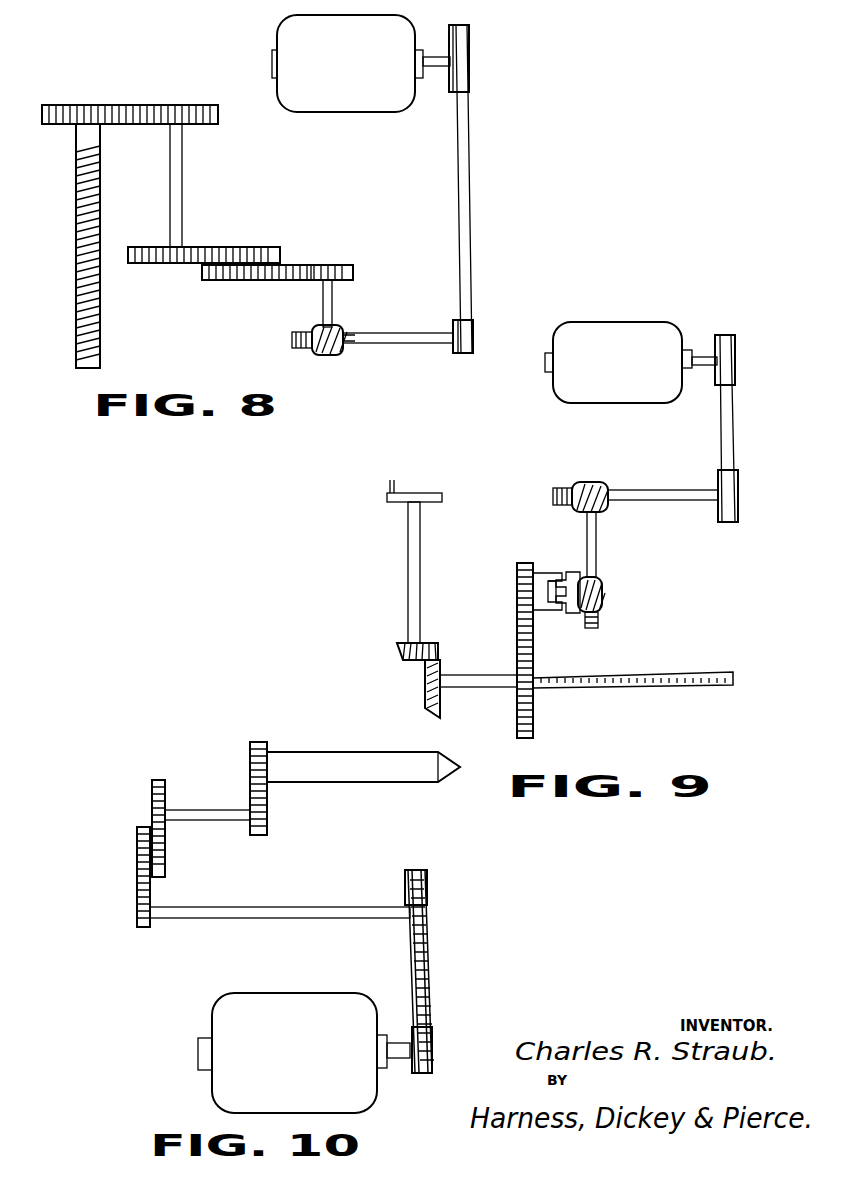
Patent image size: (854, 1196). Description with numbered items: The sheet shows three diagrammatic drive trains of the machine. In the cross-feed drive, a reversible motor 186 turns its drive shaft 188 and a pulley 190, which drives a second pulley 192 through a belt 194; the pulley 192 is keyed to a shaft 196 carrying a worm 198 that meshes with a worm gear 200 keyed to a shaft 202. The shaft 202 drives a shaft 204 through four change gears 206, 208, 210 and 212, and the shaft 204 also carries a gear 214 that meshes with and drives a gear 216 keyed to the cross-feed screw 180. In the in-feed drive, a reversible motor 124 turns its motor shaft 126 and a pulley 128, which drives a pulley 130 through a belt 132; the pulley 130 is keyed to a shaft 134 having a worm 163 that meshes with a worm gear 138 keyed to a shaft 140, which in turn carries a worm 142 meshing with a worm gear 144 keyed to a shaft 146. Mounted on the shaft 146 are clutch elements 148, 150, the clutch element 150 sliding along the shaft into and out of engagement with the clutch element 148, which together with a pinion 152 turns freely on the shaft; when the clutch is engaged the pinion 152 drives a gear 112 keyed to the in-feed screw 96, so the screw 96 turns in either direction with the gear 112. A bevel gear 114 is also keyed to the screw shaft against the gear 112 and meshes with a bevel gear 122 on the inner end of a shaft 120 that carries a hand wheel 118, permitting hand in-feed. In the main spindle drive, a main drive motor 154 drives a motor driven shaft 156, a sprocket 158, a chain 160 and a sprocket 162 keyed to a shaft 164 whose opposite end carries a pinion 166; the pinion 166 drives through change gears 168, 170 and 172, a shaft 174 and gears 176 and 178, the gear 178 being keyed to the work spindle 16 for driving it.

In FIG. 10, the work spindle 16 is at (320, 753).
In FIG. 9, the in-feed screw 96 is at (658, 672).
In FIG. 9, the gear 112 is at (516, 650).
In FIG. 9, the bevel gear 114 is at (422, 710).
In FIG. 9, the hand wheel 118 is at (428, 502).
In FIG. 9, the shaft 120 is at (408, 612).
In FIG. 9, the bevel gear 122 is at (397, 650).
In FIG. 9, the reversible motor 124 is at (630, 366).
In FIG. 9, the motor shaft 126 is at (702, 357).
In FIG. 9, the pulley 128 is at (735, 345).
In FIG. 9, the pulley 130 is at (738, 482).
In FIG. 9, the belt 132 is at (720, 452).
In FIG. 9, the shaft 134 is at (668, 508).
In FIG. 9, the worm gear 138 is at (558, 508).
In FIG. 9, the shaft 140 is at (596, 535).
In FIG. 9, the worm 142 is at (604, 590).
In FIG. 9, the worm gear 144 is at (600, 620).
In FIG. 9, the shaft 146 is at (549, 580).
In FIG. 9, the clutch element 148 is at (552, 602).
In FIG. 9, the clutch element 150 is at (576, 613).
In FIG. 9, the pinion 152 is at (517, 600).
In FIG. 10, the main drive motor 154 is at (280, 1010).
In FIG. 10, the motor driven shaft 156 is at (393, 1040).
In FIG. 10, the sprocket 158 is at (432, 1030).
In FIG. 10, the chain 160 is at (422, 972).
In FIG. 10, the sprocket 162 is at (423, 873).
In FIG. 9, the worm 163 is at (587, 482).
In FIG. 10, the shaft 164 is at (298, 906).
In FIG. 10, the pinion 166 is at (144, 927).
In FIG. 10, the change gear 168 is at (110, 898).
In FIG. 10, the change gear 170 is at (165, 865).
In FIG. 10, the change gear 172 is at (165, 784).
In FIG. 10, the shaft 174 is at (202, 810).
In FIG. 10, the gear 176 is at (267, 812).
In FIG. 10, the gear 178 is at (284, 778).
In FIG. 8, the cross-feed screw 180 is at (76, 342).
In FIG. 8, the reversible motor 186 is at (336, 112).
In FIG. 8, the drive shaft 188 is at (432, 57).
In FIG. 8, the pulley 190 is at (470, 53).
In FIG. 8, the pulley 192 is at (474, 328).
In FIG. 8, the belt 194 is at (465, 220).
In FIG. 8, the shaft 196 is at (385, 333).
In FIG. 8, the worm 198 is at (339, 326).
In FIG. 8, the worm gear 200 is at (294, 348).
In FIG. 8, the shaft 202 is at (323, 322).
In FIG. 8, the shaft 204 is at (182, 184).
In FIG. 8, the change gear 206 is at (318, 265).
In FIG. 8, the change gear 208 is at (250, 280).
In FIG. 8, the change gear 210 is at (258, 247).
In FIG. 8, the change gear 212 is at (269, 263).
In FIG. 8, the gear 214 is at (197, 105).
In FIG. 8, the gear 216 is at (93, 105).